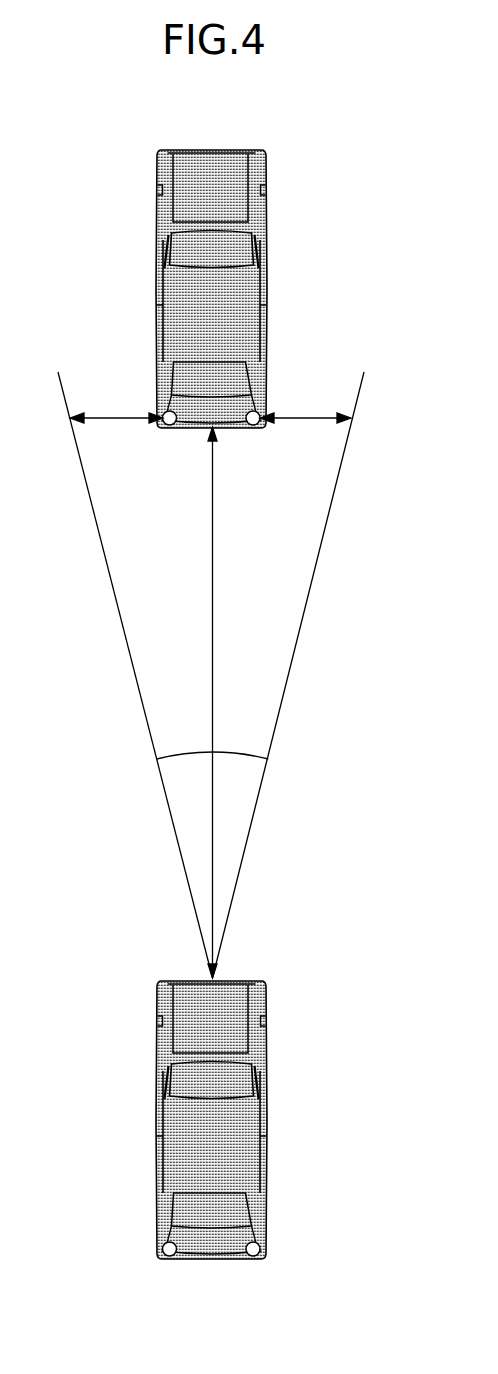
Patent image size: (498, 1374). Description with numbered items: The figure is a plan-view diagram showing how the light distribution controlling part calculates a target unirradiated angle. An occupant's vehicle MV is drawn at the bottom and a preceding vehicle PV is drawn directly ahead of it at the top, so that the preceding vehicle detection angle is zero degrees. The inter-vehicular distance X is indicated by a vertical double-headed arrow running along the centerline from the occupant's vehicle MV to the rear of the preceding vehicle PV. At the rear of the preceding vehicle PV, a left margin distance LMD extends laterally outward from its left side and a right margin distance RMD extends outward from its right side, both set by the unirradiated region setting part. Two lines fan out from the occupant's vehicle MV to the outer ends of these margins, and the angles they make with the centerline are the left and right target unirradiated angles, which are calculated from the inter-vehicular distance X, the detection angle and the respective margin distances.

The preceding vehicle PV is at (267, 258).
The occupant's vehicle MV is at (265, 1061).
The left margin distance LMD is at (116, 428).
The right margin distance RMD is at (305, 428).
The inter-vehicular distance X is at (219, 702).